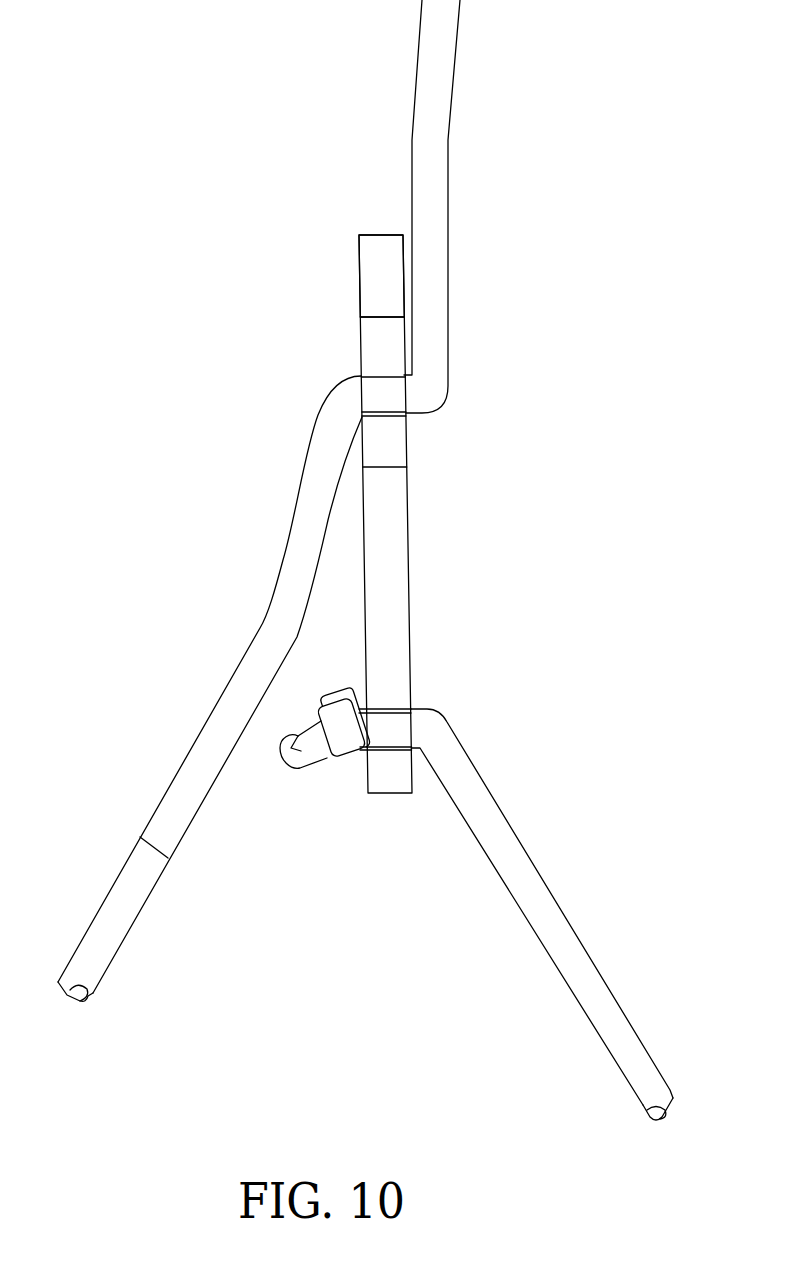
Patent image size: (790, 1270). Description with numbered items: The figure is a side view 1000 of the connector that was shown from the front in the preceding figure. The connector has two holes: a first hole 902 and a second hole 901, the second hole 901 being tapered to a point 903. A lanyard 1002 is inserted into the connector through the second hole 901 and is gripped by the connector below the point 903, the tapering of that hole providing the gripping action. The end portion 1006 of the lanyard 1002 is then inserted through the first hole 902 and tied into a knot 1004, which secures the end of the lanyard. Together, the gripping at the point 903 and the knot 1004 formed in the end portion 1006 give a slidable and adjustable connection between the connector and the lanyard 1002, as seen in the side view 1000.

The side view 1000 is at (213, 122).
The second hole 901 is at (410, 468).
The first hole 902 is at (413, 708).
The point 903 is at (360, 318).
The lanyard 1002 is at (162, 790).
The knot 1004 is at (338, 762).
The end portion 1006 is at (517, 832).